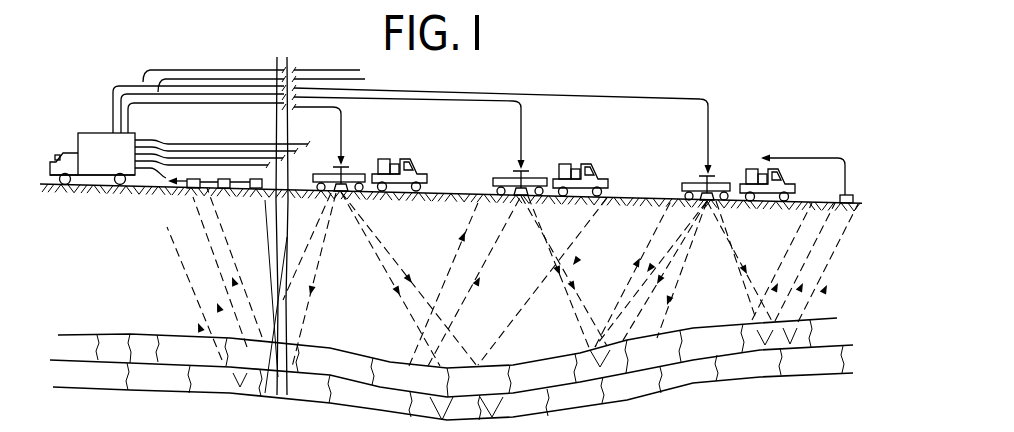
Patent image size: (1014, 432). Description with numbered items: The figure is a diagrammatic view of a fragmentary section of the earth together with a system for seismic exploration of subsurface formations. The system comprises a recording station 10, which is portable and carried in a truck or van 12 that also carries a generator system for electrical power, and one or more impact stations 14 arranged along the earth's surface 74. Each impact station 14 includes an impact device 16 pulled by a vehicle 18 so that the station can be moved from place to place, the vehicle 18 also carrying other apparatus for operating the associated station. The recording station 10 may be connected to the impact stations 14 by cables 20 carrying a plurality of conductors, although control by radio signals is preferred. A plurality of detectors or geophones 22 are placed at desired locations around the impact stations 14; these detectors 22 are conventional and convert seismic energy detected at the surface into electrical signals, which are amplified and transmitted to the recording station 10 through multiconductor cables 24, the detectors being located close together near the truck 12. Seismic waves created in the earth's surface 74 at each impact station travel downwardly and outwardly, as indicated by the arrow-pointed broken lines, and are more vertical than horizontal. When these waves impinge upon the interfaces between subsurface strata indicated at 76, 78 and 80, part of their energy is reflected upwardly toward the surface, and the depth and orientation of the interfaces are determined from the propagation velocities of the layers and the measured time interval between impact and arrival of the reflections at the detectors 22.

The recording station 10 is at (89, 129).
The truck or van 12 is at (75, 143).
The impact station 14 is at (559, 156).
The impact device 16 is at (325, 174).
The vehicle 18 is at (420, 160).
The cables 20 is at (218, 71).
The detectors or geophones 22 is at (255, 189).
The multiconductor cables 24 is at (190, 150).
The earth's surface 74 is at (91, 185).
The subsurface interface 76 is at (92, 336).
The subsurface interface 78 is at (130, 337).
The subsurface interface 80 is at (143, 390).